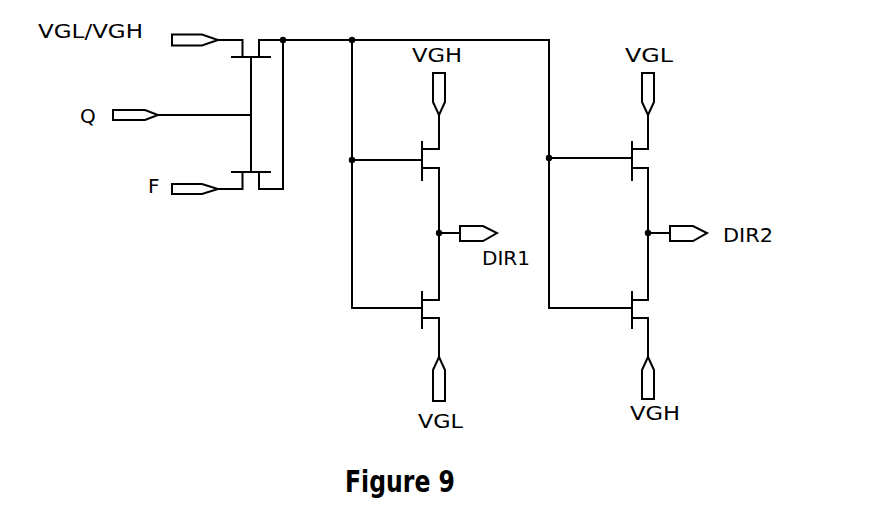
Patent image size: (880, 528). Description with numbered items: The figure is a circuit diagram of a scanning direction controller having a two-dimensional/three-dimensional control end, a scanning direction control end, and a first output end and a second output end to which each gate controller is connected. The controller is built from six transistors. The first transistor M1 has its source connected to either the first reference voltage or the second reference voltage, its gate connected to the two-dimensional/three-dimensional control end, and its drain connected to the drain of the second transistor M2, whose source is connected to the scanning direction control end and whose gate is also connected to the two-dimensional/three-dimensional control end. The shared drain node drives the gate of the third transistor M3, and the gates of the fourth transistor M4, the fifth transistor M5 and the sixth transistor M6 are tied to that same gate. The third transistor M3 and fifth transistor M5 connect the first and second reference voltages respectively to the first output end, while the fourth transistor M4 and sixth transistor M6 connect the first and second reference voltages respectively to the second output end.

The first transistor M1 is at (252, 61).
The second transistor M2 is at (252, 174).
The third transistor M3 is at (458, 187).
The fourth transistor M4 is at (671, 295).
The fifth transistor M5 is at (458, 295).
The sixth transistor M6 is at (669, 187).